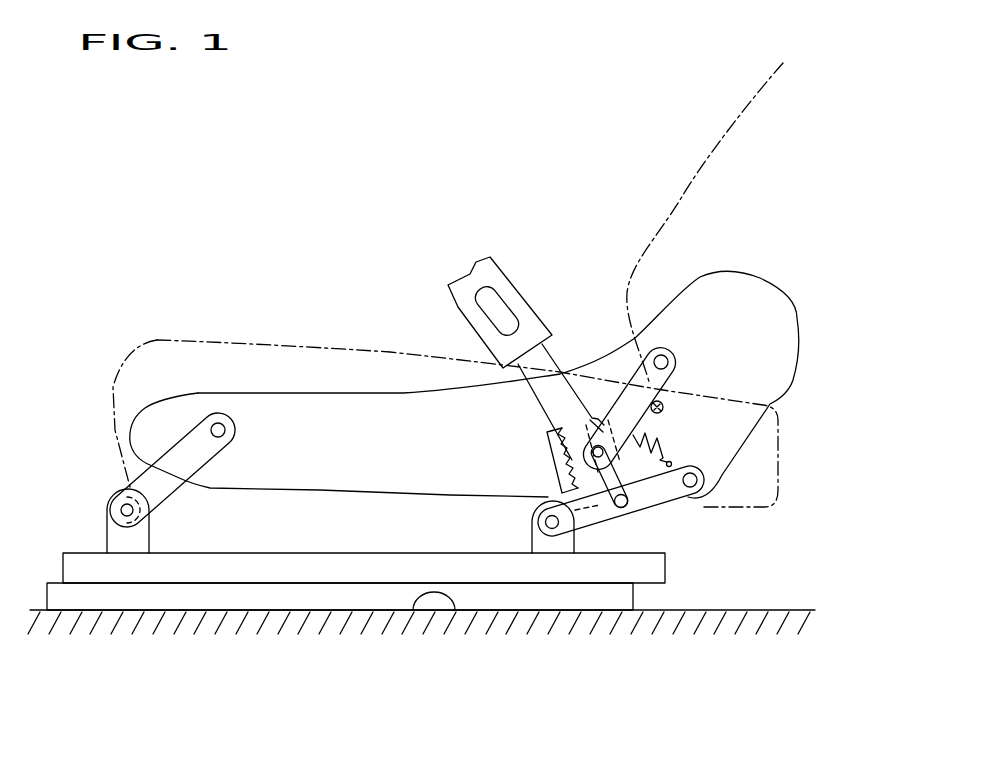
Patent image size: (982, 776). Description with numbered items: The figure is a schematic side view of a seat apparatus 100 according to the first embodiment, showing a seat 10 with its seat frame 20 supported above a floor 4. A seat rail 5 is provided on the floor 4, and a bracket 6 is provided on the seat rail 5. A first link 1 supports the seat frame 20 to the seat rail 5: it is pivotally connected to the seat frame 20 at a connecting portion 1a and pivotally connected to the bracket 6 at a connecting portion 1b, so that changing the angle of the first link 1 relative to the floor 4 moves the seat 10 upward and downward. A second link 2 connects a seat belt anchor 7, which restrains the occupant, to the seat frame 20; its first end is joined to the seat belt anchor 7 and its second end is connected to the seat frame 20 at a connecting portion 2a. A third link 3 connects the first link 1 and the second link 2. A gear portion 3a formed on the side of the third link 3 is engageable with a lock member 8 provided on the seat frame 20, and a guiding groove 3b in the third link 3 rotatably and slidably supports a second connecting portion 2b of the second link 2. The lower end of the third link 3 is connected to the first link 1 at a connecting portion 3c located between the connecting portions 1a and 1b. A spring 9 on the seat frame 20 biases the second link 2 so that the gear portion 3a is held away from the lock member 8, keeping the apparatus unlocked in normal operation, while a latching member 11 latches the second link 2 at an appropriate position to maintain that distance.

The first link 1 is at (677, 492).
The connecting portion 1a is at (700, 483).
The connecting portion 1b is at (540, 522).
The second link 2 is at (537, 380).
The connecting portion 2a is at (667, 354).
The second connecting portion 2b is at (577, 440).
The third link 3 is at (633, 482).
The gear portion 3a is at (560, 468).
The guiding groove 3b is at (603, 500).
The connecting portion 3c is at (624, 510).
The floor 4 is at (456, 614).
The seat rail 5 is at (330, 562).
The bracket 6 is at (540, 550).
The seat belt anchor 7 is at (507, 287).
The lock member 8 is at (547, 443).
The spring 9 is at (660, 440).
The seat 10 is at (187, 340).
The latching member 11 is at (672, 402).
The seat frame 20 is at (353, 405).
The seat apparatus 100 is at (462, 469).